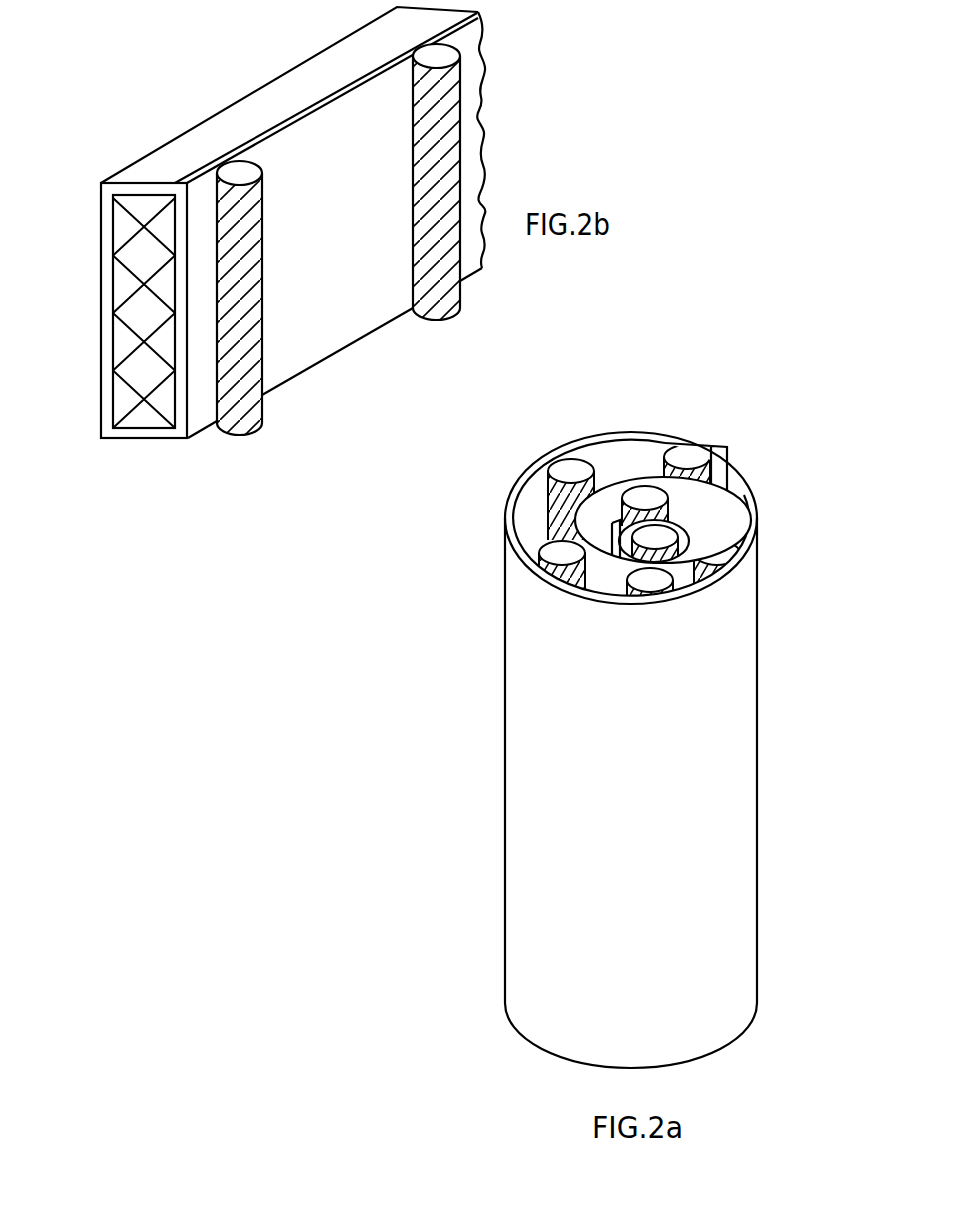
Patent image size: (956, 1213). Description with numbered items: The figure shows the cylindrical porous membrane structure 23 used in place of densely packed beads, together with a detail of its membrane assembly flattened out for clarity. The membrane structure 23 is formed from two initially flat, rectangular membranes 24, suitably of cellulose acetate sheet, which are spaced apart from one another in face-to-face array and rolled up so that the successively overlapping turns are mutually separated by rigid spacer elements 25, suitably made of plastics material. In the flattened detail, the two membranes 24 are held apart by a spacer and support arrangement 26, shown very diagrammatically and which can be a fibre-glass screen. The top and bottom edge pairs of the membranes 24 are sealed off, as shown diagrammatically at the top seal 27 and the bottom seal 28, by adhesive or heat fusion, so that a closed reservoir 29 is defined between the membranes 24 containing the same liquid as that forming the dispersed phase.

In FIG. 2a, the porous membrane structure 23 is at (473, 793).
In FIG. 2b, the rectangular membranes 24 is at (277, 128).
In FIG. 2b, the rigid spacer elements 25 is at (440, 312).
In FIG. 2b, the spacer and support arrangement 26 is at (118, 310).
In FIG. 2b, the top edge seal 27 is at (167, 167).
In FIG. 2b, the bottom edge seal 28 is at (148, 432).
In FIG. 2b, the closed reservoir 29 is at (160, 268).